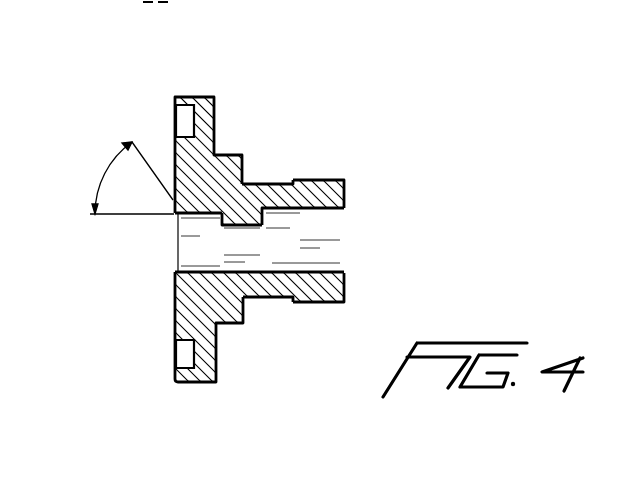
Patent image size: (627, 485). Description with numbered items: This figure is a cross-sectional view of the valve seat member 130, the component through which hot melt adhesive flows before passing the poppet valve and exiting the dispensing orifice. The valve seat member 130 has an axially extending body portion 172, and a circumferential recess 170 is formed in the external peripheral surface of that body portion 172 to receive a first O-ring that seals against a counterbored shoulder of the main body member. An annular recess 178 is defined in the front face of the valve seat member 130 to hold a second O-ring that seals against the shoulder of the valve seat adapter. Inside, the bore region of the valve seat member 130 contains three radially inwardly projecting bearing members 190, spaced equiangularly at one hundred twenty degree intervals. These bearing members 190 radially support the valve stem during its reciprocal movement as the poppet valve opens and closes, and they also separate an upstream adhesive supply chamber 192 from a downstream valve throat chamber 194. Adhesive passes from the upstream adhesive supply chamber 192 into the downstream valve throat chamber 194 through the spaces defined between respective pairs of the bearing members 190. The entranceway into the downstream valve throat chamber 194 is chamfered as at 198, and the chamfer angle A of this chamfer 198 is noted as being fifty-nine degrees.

The valve seat member 130 is at (313, 251).
The circumferential recess 170 is at (278, 181).
The axially extending body portion 172 is at (312, 190).
The annular recess 178 is at (187, 357).
The bearing members 190 is at (250, 218).
The upstream adhesive supply chamber 192 is at (338, 221).
The downstream valve throat chamber 194 is at (188, 252).
The chamfer 198 is at (168, 264).
The chamfer angle A is at (107, 153).